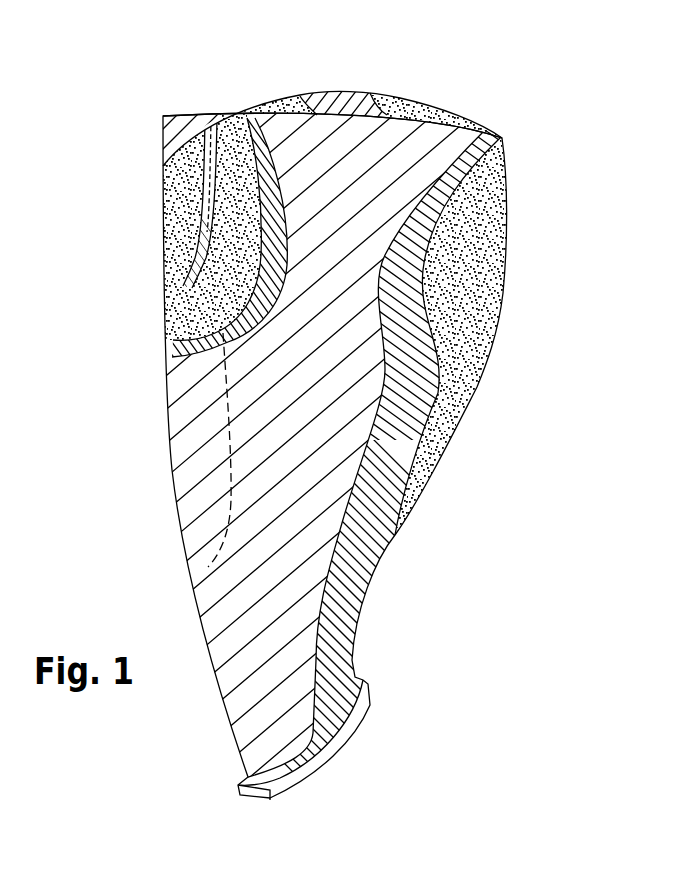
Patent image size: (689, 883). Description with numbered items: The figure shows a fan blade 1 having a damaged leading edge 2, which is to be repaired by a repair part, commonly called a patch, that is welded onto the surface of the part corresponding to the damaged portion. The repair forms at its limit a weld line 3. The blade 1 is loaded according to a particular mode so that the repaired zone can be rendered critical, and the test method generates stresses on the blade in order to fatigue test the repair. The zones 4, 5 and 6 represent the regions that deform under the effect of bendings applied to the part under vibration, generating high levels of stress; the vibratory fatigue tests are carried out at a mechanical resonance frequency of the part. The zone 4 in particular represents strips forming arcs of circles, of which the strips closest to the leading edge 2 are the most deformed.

The blade 1 is at (127, 78).
The damaged leading edge 2 is at (166, 389).
The weld line 3 is at (224, 477).
The zone 4 is at (204, 219).
The zone 5 is at (472, 297).
The zone 6 is at (346, 117).